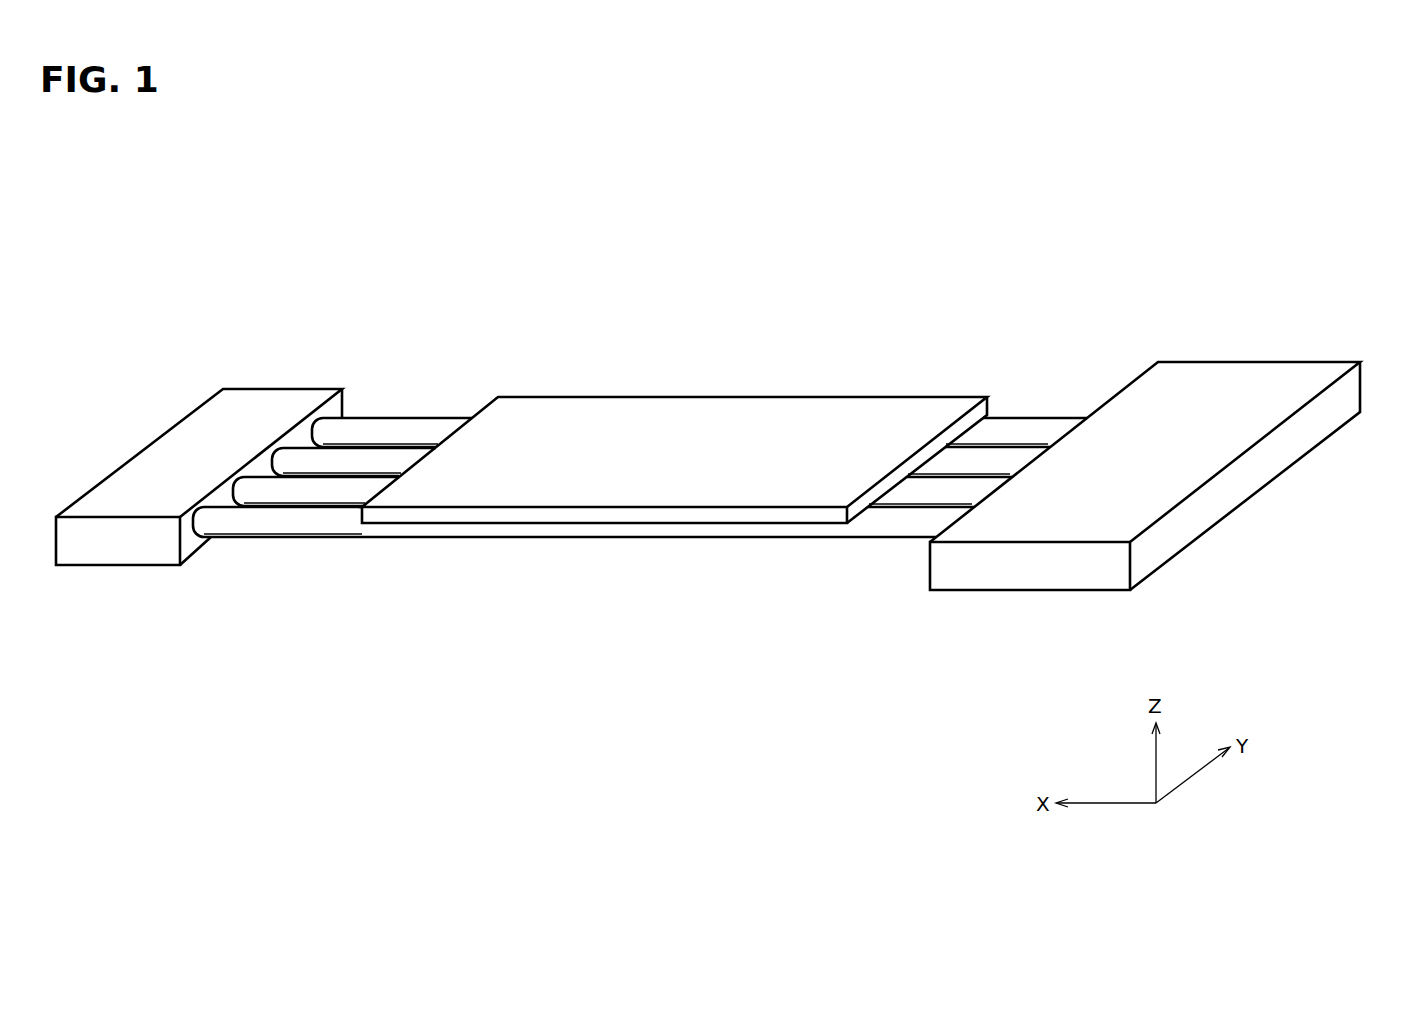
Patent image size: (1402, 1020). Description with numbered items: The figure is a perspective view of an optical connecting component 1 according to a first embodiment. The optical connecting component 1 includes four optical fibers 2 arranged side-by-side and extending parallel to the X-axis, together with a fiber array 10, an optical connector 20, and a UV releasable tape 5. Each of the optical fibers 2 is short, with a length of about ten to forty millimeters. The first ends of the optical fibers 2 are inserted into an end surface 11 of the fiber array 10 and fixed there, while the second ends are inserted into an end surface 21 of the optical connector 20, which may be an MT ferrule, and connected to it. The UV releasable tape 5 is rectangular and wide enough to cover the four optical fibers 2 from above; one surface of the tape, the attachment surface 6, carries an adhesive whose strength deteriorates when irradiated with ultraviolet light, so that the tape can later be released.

The optical connecting component 1 is at (591, 292).
The optical fibers 2 is at (997, 460).
The UV releasable tape 5 is at (688, 418).
The attachment surface 6 is at (588, 524).
The fiber array 10 is at (273, 400).
The end surface 11 is at (190, 548).
The optical connector 20 is at (1235, 383).
The end surface 21 is at (928, 567).